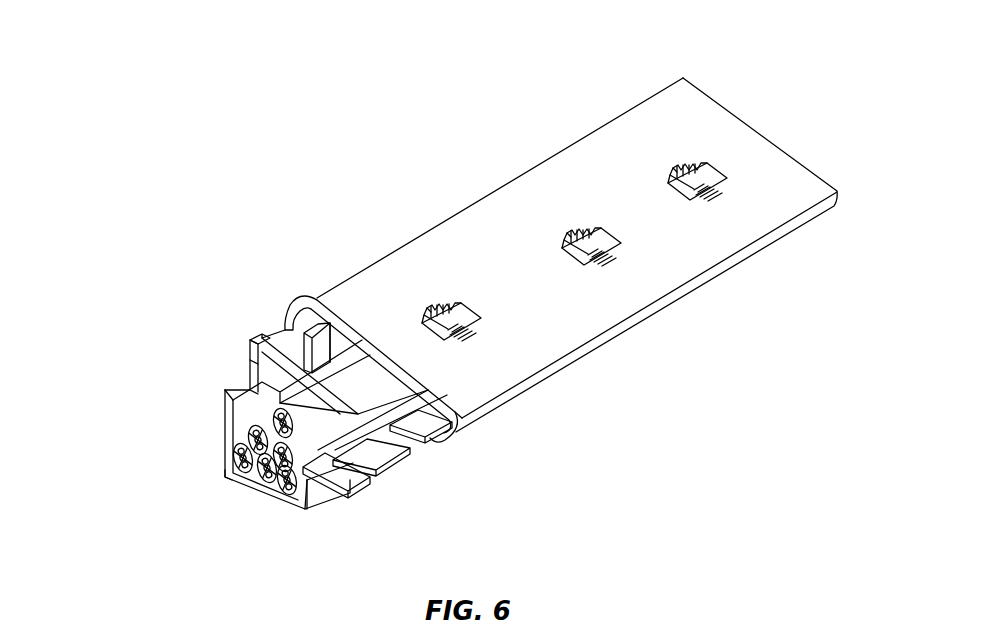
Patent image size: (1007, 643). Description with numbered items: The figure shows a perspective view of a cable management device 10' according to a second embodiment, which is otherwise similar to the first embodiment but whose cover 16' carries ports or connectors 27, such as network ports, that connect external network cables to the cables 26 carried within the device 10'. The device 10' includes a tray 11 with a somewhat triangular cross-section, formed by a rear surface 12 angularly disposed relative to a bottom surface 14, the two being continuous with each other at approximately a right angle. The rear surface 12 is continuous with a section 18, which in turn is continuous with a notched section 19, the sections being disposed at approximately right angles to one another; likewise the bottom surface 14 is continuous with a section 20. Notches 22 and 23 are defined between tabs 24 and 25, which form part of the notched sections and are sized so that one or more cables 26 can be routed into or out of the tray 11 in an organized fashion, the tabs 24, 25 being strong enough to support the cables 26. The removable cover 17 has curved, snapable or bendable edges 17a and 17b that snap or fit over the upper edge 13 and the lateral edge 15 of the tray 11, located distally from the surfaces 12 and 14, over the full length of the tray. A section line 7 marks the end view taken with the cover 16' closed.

The device 10' is at (322, 89).
The cover 16' is at (577, 254).
The ports or connectors 27 is at (712, 172).
The cover 17 is at (287, 330).
The snapable or bendable edge 17a is at (270, 333).
The snapable or bendable edge 17b is at (445, 440).
The section 19 is at (463, 420).
The notch 22 is at (265, 353).
The upper edge 13 is at (252, 362).
The tab 24 is at (250, 375).
The section 18 is at (242, 390).
The rear surface 12 is at (225, 432).
The tray 11 is at (225, 477).
The cables 26 is at (253, 485).
The bottom surface 14 is at (307, 498).
The section 20 is at (317, 502).
The lateral edge 15 is at (368, 488).
The notch 23 is at (397, 467).
The tab 25 is at (410, 448).
The section line 7 is at (225, 460).